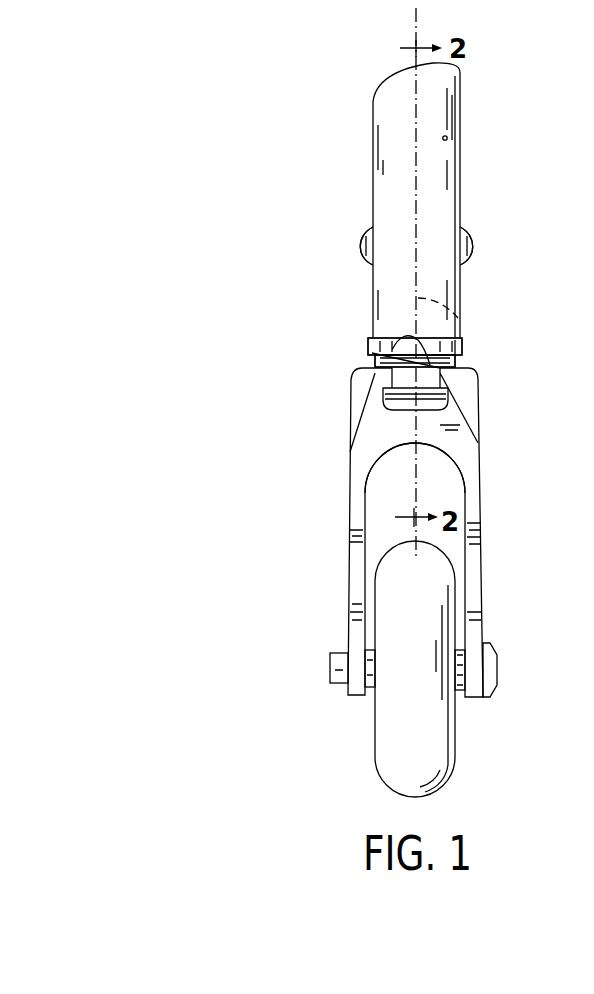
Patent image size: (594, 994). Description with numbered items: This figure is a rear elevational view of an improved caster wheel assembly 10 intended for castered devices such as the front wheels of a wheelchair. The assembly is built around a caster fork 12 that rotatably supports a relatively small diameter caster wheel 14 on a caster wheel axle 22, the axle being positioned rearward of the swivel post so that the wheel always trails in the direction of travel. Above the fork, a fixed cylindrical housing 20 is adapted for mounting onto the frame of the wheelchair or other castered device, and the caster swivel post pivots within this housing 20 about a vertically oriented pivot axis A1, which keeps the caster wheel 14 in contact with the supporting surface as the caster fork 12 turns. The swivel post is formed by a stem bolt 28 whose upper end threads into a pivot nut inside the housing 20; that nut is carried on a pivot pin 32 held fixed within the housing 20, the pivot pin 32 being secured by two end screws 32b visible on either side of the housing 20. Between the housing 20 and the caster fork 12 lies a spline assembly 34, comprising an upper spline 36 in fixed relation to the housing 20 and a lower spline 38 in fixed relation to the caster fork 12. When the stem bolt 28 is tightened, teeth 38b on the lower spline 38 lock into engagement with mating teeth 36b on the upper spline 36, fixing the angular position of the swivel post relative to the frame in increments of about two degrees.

The caster wheel assembly 10 is at (238, 192).
The caster fork 12 is at (480, 416).
The caster wheel 14 is at (446, 578).
The housing 20 is at (460, 172).
The caster wheel axle 22 is at (495, 630).
The stem bolt 28 is at (423, 456).
The pivot pin 32 is at (474, 220).
The end screws 32b is at (362, 245).
The spline assembly 34 is at (330, 362).
The upper spline 36 is at (370, 345).
The mating teeth 36b is at (462, 344).
The lower spline 38 is at (372, 368).
The teeth 38b is at (448, 390).
The pivot axis A1 is at (455, 306).